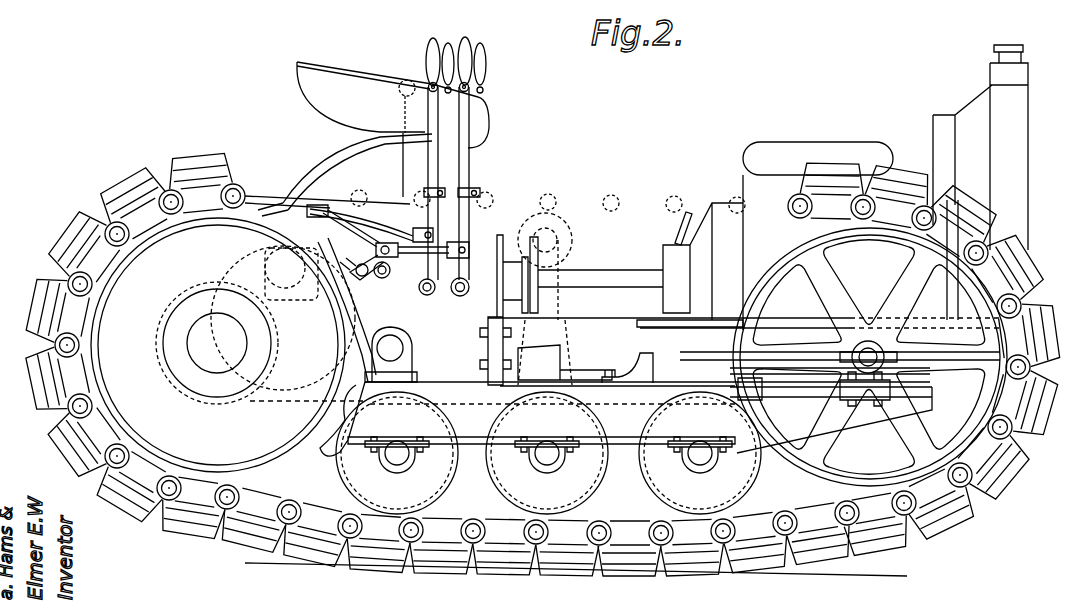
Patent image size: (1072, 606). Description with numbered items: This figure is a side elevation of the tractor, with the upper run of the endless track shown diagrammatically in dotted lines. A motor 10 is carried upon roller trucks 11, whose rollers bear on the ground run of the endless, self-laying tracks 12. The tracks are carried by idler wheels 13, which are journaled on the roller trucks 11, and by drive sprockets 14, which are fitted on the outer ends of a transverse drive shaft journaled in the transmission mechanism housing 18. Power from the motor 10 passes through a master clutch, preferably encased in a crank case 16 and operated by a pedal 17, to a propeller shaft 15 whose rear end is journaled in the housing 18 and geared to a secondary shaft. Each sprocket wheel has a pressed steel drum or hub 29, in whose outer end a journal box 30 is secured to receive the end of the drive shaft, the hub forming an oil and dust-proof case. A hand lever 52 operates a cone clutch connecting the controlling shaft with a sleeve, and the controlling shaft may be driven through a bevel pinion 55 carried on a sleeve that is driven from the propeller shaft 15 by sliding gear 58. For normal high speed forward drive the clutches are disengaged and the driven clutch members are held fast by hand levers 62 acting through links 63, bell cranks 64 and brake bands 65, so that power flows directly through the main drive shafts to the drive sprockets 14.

The motor 10 is at (885, 187).
The roller trucks 11 is at (668, 416).
The endless self-laying tracks 12 is at (580, 555).
The idler wheels 13 is at (870, 357).
The drive sprockets 14 is at (358, 327).
The propeller shaft 15 is at (612, 282).
The crank case 16 is at (690, 265).
The pedal 17 is at (668, 228).
The transmission mechanism housing 18 is at (409, 354).
The drum or hub 29 is at (228, 345).
The journal box 30 is at (217, 343).
The hand lever 52 is at (428, 109).
The bevel pinion 55 is at (329, 218).
The sliding gear 58 is at (345, 175).
The hand levers 62 is at (452, 158).
The links 63 is at (430, 290).
The bell cranks 64 is at (380, 295).
The brake bands 65 is at (386, 245).